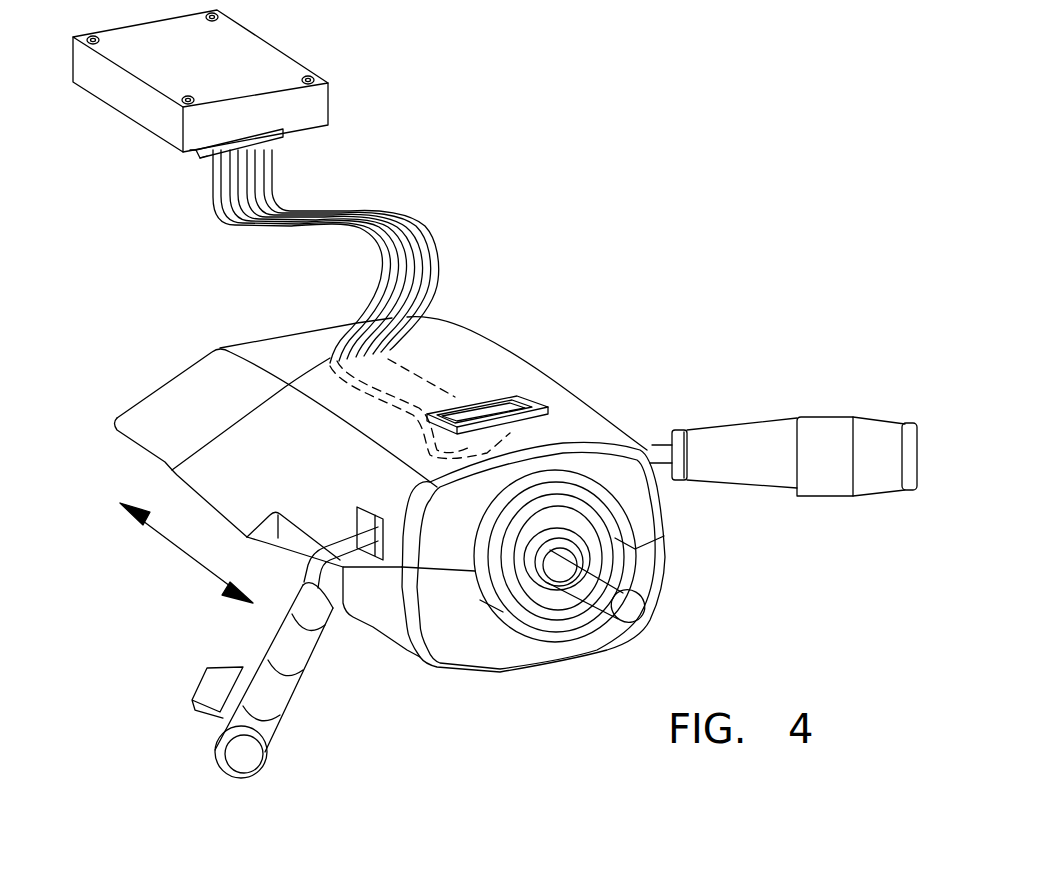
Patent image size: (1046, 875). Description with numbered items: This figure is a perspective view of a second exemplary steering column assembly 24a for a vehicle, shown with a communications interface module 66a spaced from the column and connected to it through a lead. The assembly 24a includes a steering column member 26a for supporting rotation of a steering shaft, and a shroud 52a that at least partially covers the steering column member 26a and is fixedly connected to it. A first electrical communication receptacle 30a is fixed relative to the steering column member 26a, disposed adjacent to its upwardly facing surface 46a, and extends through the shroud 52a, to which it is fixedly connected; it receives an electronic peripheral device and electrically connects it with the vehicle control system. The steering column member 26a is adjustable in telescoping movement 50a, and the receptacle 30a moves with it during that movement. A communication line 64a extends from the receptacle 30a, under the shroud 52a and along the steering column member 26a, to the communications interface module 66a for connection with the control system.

The steering column assembly 24a is at (708, 308).
The steering column member 26a is at (160, 428).
The first electrical communication receptacle 30a is at (517, 403).
The upwardly facing surface 46a is at (260, 347).
The telescoping movement 50a is at (180, 550).
The shroud 52a is at (537, 357).
The communication line 64a is at (417, 222).
The communications interface module 66a is at (273, 58).